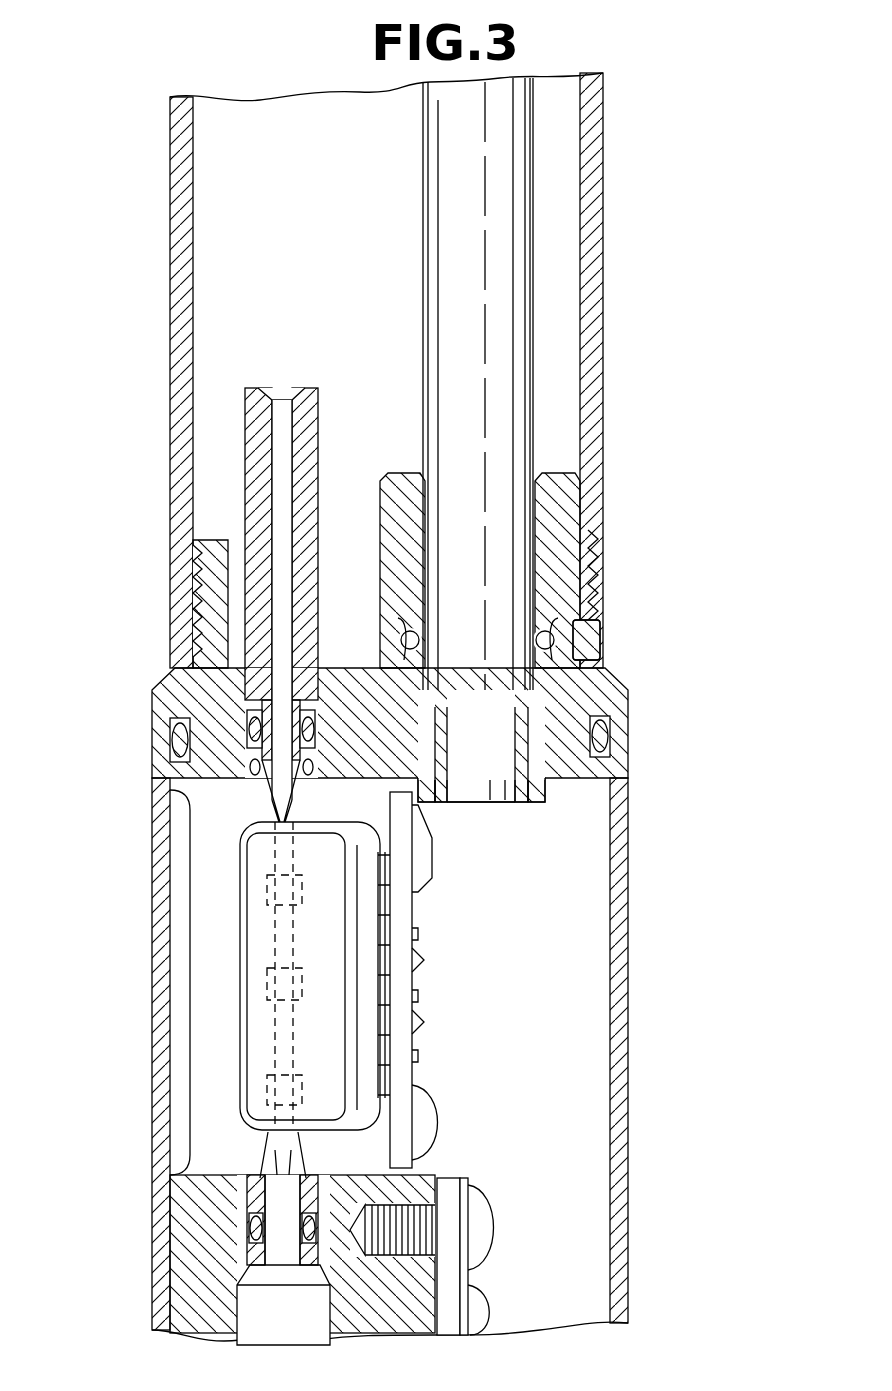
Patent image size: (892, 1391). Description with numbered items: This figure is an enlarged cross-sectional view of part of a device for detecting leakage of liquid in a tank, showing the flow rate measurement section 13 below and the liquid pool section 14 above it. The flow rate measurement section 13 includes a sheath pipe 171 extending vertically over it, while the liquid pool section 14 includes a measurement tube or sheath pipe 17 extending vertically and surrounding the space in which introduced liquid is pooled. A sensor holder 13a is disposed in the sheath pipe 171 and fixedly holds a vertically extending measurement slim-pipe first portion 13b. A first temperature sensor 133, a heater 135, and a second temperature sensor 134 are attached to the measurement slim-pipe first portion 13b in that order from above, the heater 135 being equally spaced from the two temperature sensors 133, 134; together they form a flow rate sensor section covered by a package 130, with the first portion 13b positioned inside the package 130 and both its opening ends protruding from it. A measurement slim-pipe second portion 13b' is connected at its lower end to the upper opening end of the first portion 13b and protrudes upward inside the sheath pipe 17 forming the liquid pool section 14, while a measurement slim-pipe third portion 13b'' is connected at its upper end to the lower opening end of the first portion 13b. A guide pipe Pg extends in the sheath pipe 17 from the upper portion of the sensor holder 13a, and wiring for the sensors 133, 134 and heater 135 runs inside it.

The flow rate measurement section 13 is at (710, 672).
The liquid pool section 14 is at (710, 657).
The sheath pipe 17 is at (178, 256).
The guide pipe Pg is at (452, 158).
The sensor holder 13a is at (178, 682).
The measurement slim-pipe first portion 13b is at (254, 980).
The measurement slim-pipe second portion 13b' is at (330, 599).
The measurement slim-pipe third portion 13b'' is at (190, 1238).
The package 130 is at (262, 1033).
The first temperature sensor 133 is at (267, 893).
The second temperature sensor 134 is at (270, 1085).
The heater 135 is at (272, 993).
The sheath pipe 171 is at (160, 975).